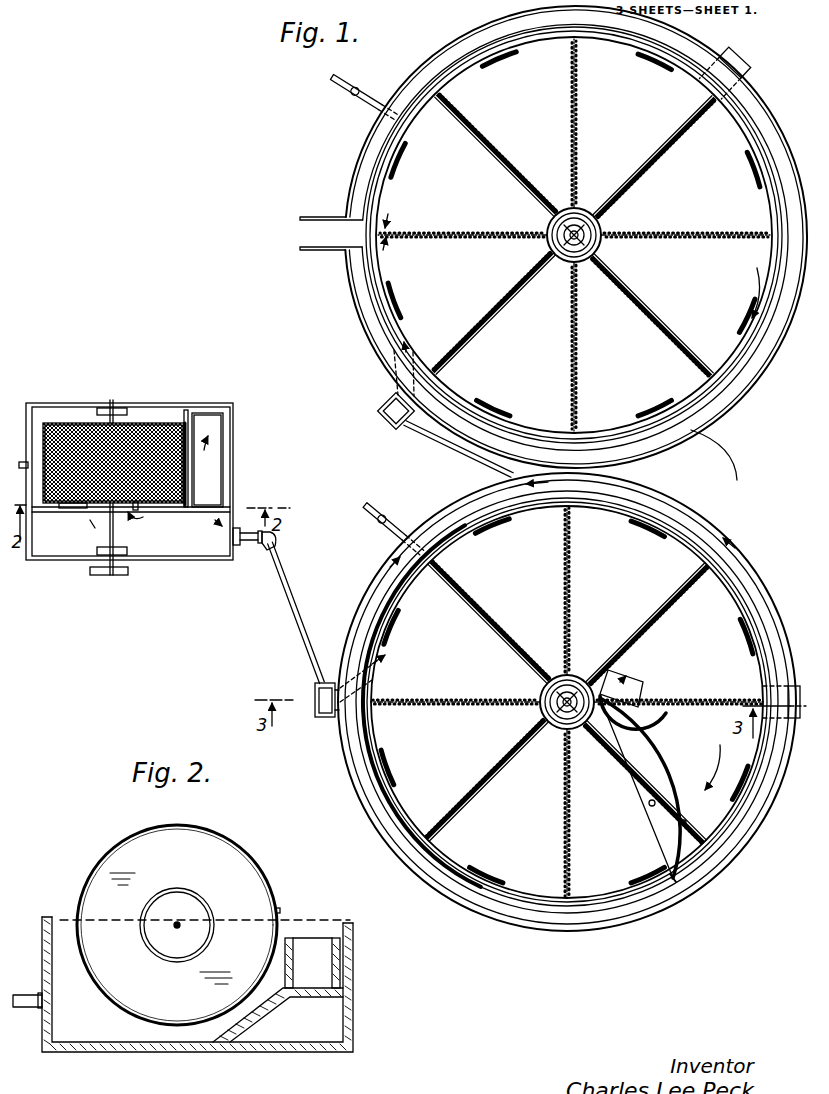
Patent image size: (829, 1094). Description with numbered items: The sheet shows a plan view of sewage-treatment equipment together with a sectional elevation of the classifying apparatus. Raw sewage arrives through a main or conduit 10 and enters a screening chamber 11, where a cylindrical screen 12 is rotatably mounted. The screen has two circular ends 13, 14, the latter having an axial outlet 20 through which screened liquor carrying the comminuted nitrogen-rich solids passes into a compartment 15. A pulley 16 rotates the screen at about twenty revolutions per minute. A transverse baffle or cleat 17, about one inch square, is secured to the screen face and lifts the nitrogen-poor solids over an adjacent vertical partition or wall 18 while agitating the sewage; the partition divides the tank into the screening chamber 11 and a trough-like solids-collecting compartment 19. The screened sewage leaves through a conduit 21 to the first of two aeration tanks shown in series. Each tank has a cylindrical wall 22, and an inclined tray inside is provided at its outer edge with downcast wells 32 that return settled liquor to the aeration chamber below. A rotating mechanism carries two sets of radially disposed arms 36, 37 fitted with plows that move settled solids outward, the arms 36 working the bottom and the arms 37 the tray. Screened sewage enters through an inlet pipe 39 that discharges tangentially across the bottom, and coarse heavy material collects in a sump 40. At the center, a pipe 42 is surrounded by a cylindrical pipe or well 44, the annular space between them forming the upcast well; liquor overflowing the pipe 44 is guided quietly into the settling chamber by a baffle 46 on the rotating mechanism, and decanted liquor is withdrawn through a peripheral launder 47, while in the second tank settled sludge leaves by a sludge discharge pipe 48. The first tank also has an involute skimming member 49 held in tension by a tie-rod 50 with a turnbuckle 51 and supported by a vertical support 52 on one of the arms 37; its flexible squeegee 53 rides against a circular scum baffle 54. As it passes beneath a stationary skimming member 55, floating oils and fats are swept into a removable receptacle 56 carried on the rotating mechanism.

In FIG. 1, the main or conduit 10 is at (26, 403).
In FIG. 2, the main or conduit 10 is at (30, 995).
In FIG. 1, the screening chamber 11 is at (50, 412).
In FIG. 2, the screening chamber 11 is at (62, 927).
In FIG. 1, the cylindrical screen 12 is at (145, 437).
In FIG. 2, the cylindrical screen 12 is at (138, 836).
In FIG. 1, the circular end 13 is at (78, 423).
In FIG. 2, the circular end 13 is at (177, 925).
In FIG. 1, the circular end 14 is at (62, 508).
In FIG. 1, the compartment 15 is at (158, 545).
In FIG. 1, the pulley 16 is at (107, 575).
In FIG. 1, the transverse baffle or cleat 17 is at (185, 422).
In FIG. 2, the transverse baffle or cleat 17 is at (279, 906).
In FIG. 1, the partition or wall 18 is at (189, 475).
In FIG. 2, the partition or wall 18 is at (291, 938).
In FIG. 1, the solids-collecting compartment 19 is at (222, 438).
In FIG. 2, the solids-collecting compartment 19 is at (320, 943).
In FIG. 1, the axial outlet 20 is at (138, 510).
In FIG. 2, the axial outlet 20 is at (196, 890).
In FIG. 1, the conduit 21 is at (288, 573).
In FIG. 1, the cylindrical wall 22 is at (370, 298).
In FIG. 1, the downcast wells 32 is at (772, 180).
In FIG. 1, the radial arms 36 is at (689, 239).
In FIG. 1, the radial arms 37 is at (656, 161).
In FIG. 1, the inlet pipe 39 is at (400, 426).
In FIG. 1, the sump 40 is at (715, 89).
In FIG. 1, the pipe 42 is at (591, 244).
In FIG. 1, the cylindrical pipe or well 44 is at (606, 224).
In FIG. 1, the baffle 46 is at (548, 222).
In FIG. 1, the peripheral launder 47 is at (702, 522).
In FIG. 1, the sludge discharge pipe 48 is at (364, 100).
In FIG. 1, the involute skimming member 49 is at (672, 758).
In FIG. 1, the tie-rod 50 is at (660, 827).
In FIG. 1, the turnbuckle 51 is at (649, 804).
In FIG. 1, the vertical support 52 is at (688, 820).
In FIG. 1, the flexible squeegee 53 is at (670, 877).
In FIG. 1, the circular scum baffle 54 is at (748, 355).
In FIG. 1, the stationary skimming member 55 is at (632, 728).
In FIG. 1, the receptacle 56 is at (627, 673).